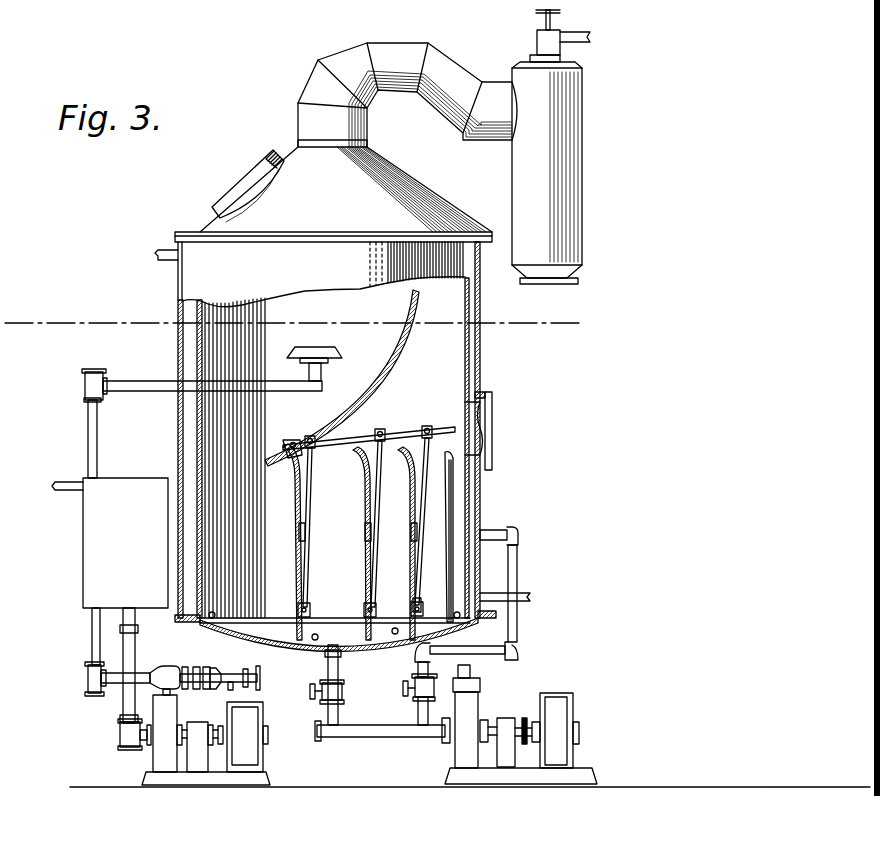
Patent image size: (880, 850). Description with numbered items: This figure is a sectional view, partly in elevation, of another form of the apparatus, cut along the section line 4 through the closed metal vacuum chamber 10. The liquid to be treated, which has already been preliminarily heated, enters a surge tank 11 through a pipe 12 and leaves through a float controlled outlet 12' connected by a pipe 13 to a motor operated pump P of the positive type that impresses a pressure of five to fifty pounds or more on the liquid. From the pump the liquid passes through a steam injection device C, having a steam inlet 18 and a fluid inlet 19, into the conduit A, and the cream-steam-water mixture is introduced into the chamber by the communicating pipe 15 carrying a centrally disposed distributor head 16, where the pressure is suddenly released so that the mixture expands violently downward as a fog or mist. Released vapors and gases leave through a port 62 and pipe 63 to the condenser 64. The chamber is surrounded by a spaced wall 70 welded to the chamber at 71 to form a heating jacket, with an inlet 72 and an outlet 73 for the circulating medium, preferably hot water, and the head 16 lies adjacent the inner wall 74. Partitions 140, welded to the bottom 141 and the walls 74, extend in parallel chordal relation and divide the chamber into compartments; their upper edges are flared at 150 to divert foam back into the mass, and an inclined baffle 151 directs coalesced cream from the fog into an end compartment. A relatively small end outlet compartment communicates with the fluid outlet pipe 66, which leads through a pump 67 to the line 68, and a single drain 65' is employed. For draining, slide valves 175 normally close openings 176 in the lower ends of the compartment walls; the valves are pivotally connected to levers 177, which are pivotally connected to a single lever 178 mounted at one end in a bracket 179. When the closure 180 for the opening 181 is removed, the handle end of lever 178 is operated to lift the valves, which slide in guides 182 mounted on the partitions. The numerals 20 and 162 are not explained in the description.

The section line 4 is at (41, 330).
The vacuum chamber 10 is at (455, 309).
The surge tank 11 is at (133, 568).
The pipe 12 is at (60, 467).
The float controlled outlet 12' is at (146, 665).
The pipe 13 is at (149, 386).
The communicating pipe 15 is at (322, 372).
The distributor head 16 is at (316, 347).
The steam inlet 18 is at (230, 684).
The fluid inlet 19 is at (247, 737).
The coupling 20 is at (172, 672).
The port 62 is at (322, 150).
The pipe 63 is at (410, 48).
The condenser 64 is at (512, 168).
The drain 65' is at (342, 702).
The fluid outlet pipe 66 is at (516, 560).
The pump 67 is at (468, 713).
The pipe 68 is at (386, 737).
The spaced wall 70 is at (178, 352).
The weld 71 is at (498, 613).
The inlet 72 is at (520, 593).
The outlet 73 is at (160, 250).
The inner wall 74 is at (480, 342).
The partitions 140 is at (293, 565).
The bottom 141 is at (382, 643).
The flared portion 150 is at (353, 453).
The inclined baffle 151 is at (394, 352).
The link 162 is at (419, 598).
The slide valves 175 is at (288, 650).
The openings 176 is at (290, 630).
The levers 177 is at (309, 532).
The lever 178 is at (412, 428).
The bracket 179 is at (292, 437).
The closure 180 is at (540, 427).
The opening 181 is at (480, 394).
The guides 182 is at (298, 594).
The pipe or conduit A is at (92, 635).
The steam injection device C is at (170, 667).
The pump P is at (160, 759).